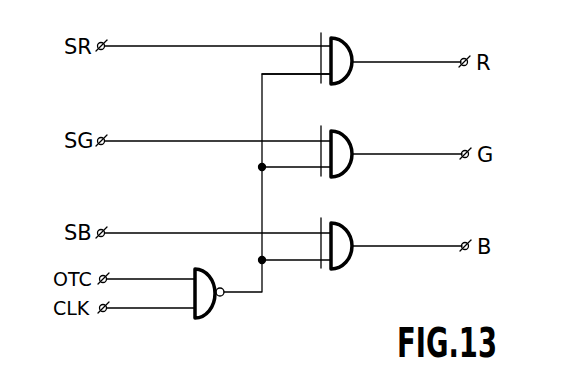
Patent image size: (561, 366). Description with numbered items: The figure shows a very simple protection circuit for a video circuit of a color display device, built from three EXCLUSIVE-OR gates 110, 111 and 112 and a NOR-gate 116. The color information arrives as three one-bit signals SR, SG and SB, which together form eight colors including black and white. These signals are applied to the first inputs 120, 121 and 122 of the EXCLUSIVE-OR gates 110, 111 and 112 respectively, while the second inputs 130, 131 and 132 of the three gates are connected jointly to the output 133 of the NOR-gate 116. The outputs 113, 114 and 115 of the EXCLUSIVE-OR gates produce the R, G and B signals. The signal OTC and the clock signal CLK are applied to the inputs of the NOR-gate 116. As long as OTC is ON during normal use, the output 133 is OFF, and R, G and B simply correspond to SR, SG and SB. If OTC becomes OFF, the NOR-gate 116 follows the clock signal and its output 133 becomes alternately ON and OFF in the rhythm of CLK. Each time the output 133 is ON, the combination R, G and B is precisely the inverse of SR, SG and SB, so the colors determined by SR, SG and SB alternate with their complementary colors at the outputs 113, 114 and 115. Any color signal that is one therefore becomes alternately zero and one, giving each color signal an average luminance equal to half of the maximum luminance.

The EXCLUSIVE-OR gate 110 is at (356, 41).
The EXCLUSIVE-OR gate 111 is at (356, 135).
The EXCLUSIVE-OR gate 112 is at (356, 228).
The output 113 is at (355, 65).
The output 114 is at (355, 157).
The output 115 is at (355, 249).
The NOR-gate 116 is at (213, 303).
The first input 120 is at (320, 45).
The first input 121 is at (320, 139).
The first input 122 is at (320, 232).
The second input 130 is at (320, 80).
The second input 131 is at (320, 174).
The second input 132 is at (320, 265).
The output 133 is at (231, 285).